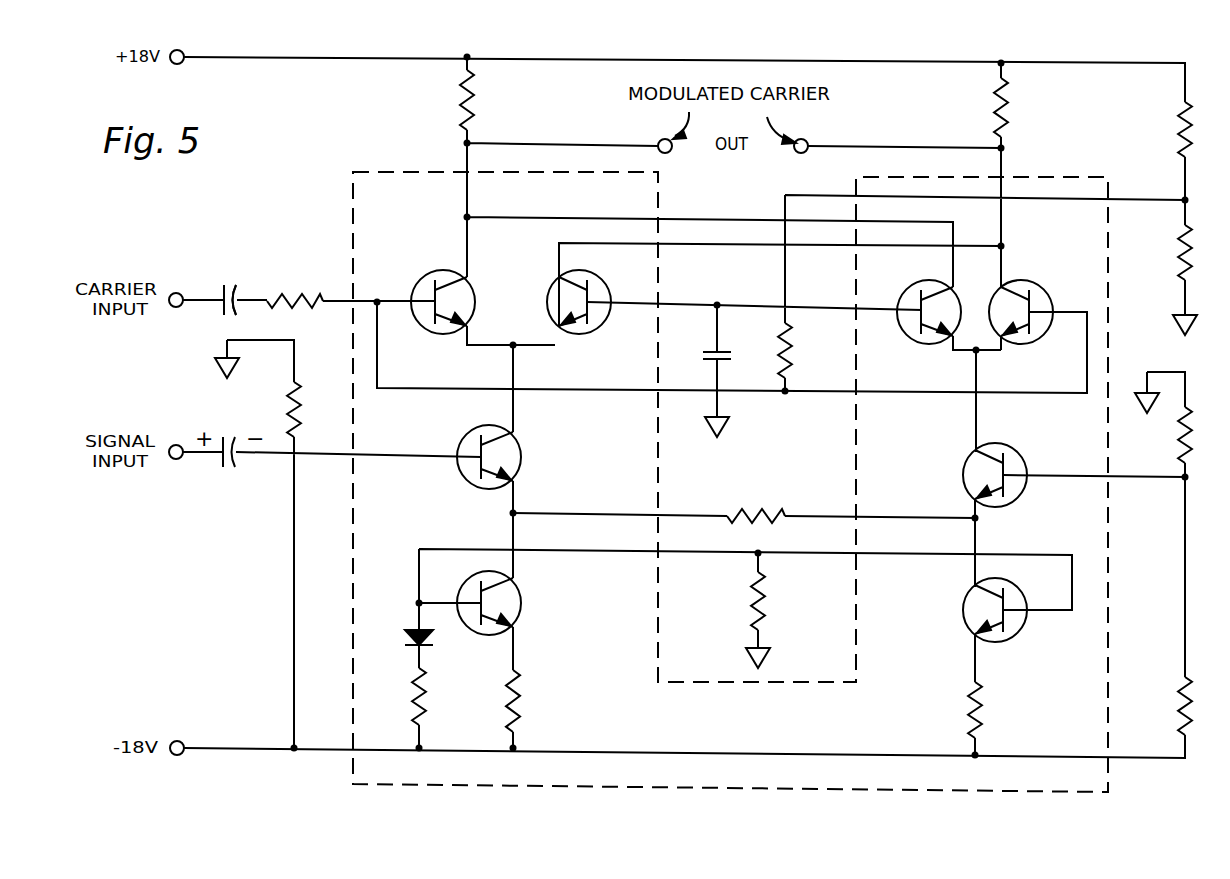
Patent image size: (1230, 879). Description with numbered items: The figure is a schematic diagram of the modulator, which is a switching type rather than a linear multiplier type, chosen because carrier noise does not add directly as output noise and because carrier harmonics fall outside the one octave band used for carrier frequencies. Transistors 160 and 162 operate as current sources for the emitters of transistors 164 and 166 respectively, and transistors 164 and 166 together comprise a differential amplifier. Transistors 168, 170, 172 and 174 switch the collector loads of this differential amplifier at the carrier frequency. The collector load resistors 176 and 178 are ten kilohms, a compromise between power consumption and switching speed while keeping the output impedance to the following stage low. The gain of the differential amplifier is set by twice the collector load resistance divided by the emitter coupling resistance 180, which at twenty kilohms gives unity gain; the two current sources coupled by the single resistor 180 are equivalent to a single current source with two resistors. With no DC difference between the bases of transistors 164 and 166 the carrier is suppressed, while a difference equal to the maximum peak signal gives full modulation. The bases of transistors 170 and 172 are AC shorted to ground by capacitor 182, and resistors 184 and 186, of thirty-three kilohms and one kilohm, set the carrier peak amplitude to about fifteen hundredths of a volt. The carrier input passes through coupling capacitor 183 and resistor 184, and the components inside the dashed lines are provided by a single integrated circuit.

The transistor 160 is at (515, 600).
The transistor 162 is at (1012, 632).
The transistor 164 is at (515, 455).
The transistor 166 is at (1012, 453).
The transistor 168 is at (418, 290).
The transistor 170 is at (602, 293).
The transistor 172 is at (905, 298).
The transistor 174 is at (1042, 300).
The collector load resistor 176 is at (456, 108).
The collector load resistor 178 is at (1010, 100).
The emitter coupling resistor 180 is at (748, 508).
The capacitor 182 is at (702, 358).
The coupling capacitor 183 is at (230, 283).
The resistor 184 is at (300, 283).
The resistor 186 is at (795, 340).